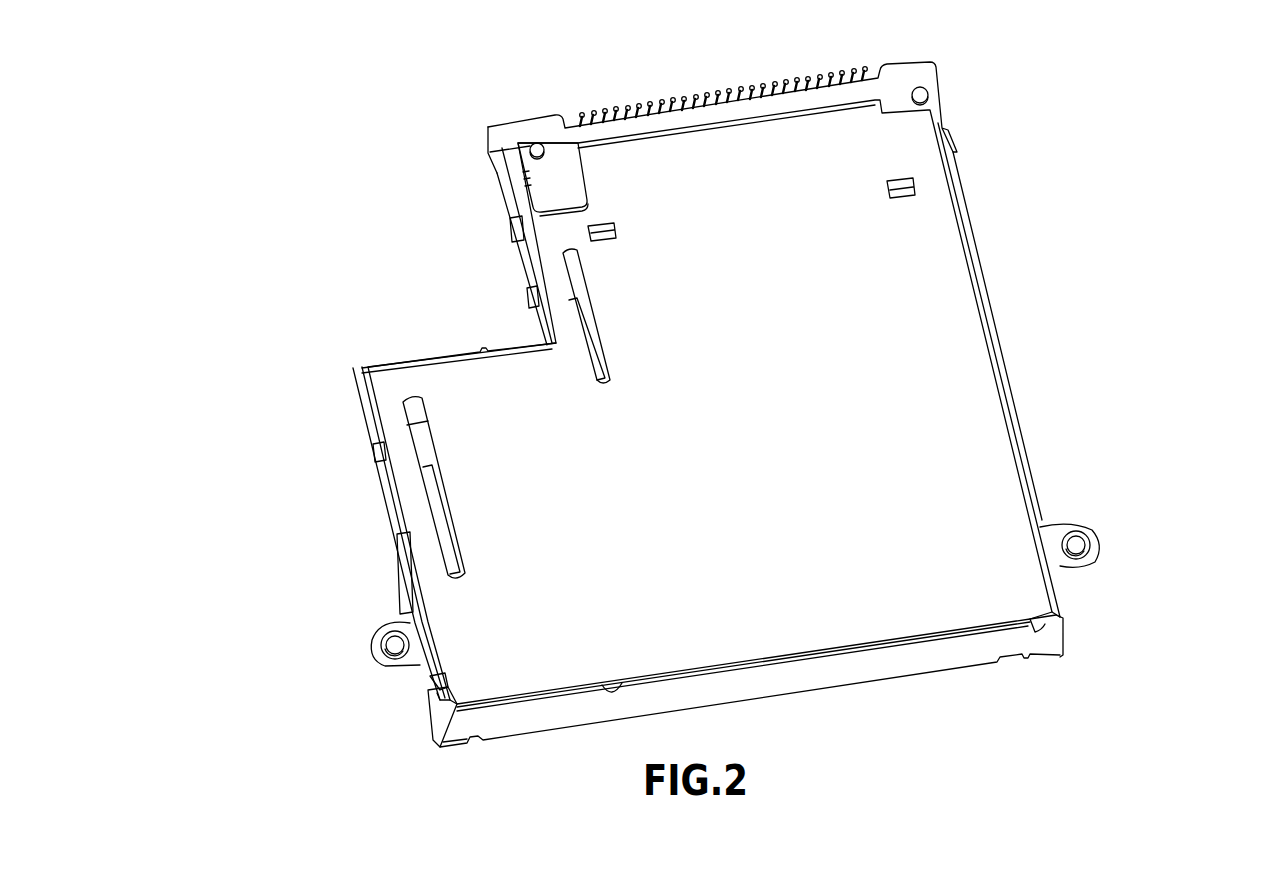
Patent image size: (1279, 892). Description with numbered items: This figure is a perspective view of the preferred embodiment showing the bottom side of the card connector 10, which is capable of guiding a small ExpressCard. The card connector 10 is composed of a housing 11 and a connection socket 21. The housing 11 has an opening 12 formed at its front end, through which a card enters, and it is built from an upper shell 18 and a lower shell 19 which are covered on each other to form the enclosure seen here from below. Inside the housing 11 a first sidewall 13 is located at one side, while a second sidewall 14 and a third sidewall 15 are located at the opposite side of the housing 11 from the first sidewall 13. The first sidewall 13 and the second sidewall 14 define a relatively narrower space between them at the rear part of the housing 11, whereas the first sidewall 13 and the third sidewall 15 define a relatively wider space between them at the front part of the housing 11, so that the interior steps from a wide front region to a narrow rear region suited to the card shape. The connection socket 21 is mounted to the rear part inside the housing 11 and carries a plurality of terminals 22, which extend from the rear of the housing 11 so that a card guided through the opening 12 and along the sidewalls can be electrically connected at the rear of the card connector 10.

The card connector 10 is at (302, 607).
The housing 11 is at (991, 733).
The opening 12 is at (773, 678).
The first sidewall 13 is at (1063, 637).
The second sidewall 14 is at (525, 268).
The third sidewall 15 is at (435, 717).
The upper shell 18 is at (960, 673).
The lower shell 19 is at (915, 615).
The connection socket 21 is at (883, 67).
The terminals 22 is at (737, 92).